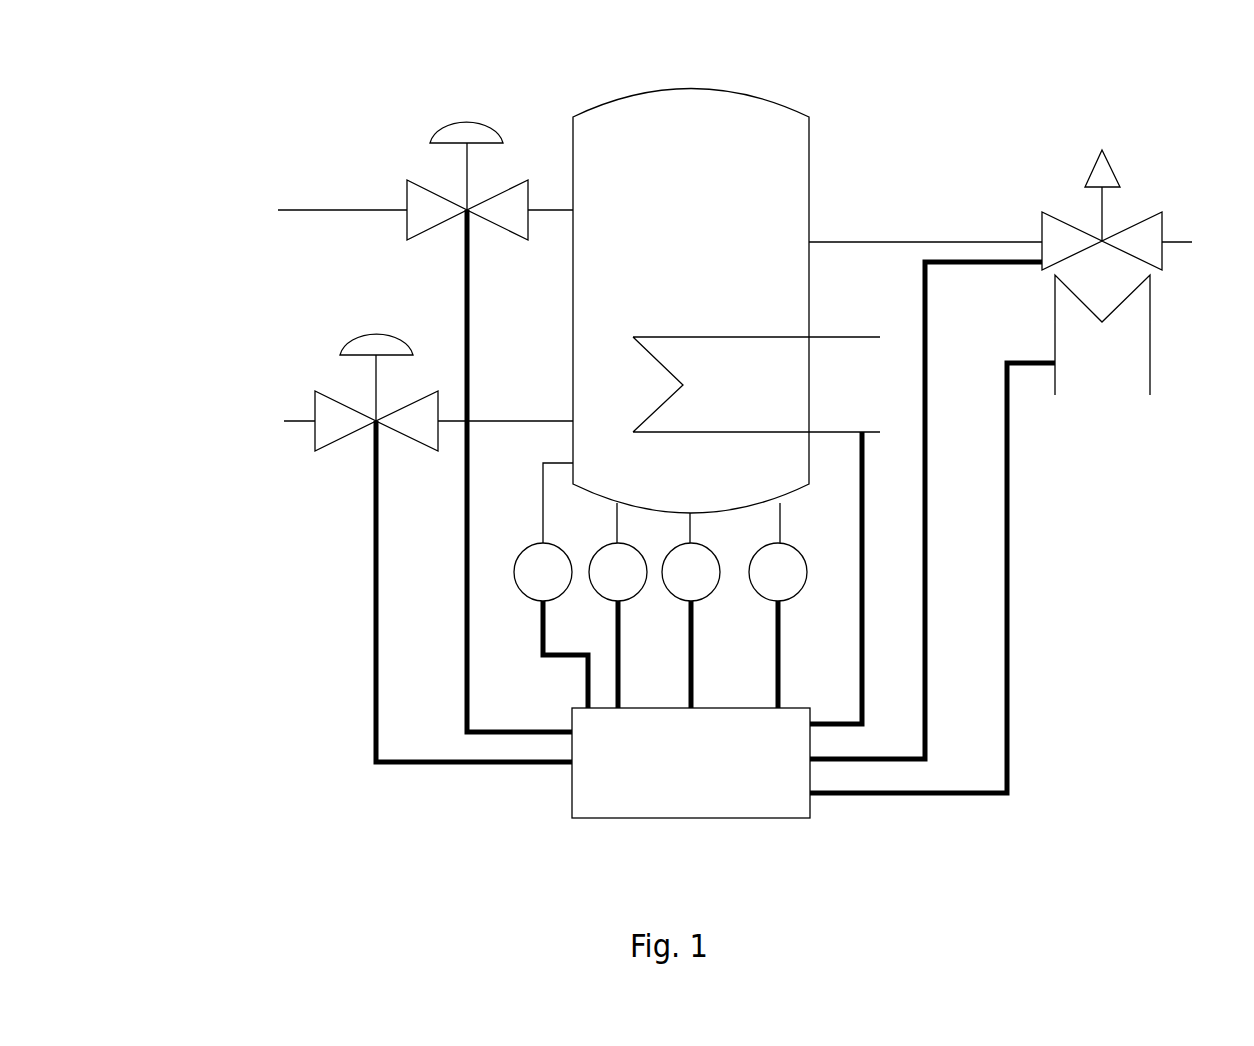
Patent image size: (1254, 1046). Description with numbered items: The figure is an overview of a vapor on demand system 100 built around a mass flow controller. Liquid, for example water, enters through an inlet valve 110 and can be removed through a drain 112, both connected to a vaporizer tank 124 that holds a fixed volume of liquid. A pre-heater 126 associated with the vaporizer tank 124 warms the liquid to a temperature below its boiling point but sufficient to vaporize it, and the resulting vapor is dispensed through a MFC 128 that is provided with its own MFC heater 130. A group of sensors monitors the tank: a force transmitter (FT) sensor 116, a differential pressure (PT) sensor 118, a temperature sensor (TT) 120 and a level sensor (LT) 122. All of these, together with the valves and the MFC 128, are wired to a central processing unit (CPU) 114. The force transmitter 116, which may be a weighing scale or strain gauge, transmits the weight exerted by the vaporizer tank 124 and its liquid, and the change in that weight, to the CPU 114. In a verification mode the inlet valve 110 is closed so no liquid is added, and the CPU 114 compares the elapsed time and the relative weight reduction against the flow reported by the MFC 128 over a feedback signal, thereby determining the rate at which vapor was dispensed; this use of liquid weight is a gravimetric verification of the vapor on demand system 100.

The vapor on demand system 100 is at (373, 97).
The inlet valve 110 is at (222, 187).
The drain 112 is at (189, 398).
The central processing unit 114 is at (588, 797).
The force transmitter sensor 116 is at (802, 577).
The differential pressure sensor 118 is at (607, 593).
The temperature sensor 120 is at (710, 577).
The level sensor 122 is at (520, 552).
The vaporizer tank 124 is at (682, 102).
The pre-heater 126 is at (733, 345).
The MFC 128 is at (1078, 102).
The MFC heater 130 is at (1148, 406).